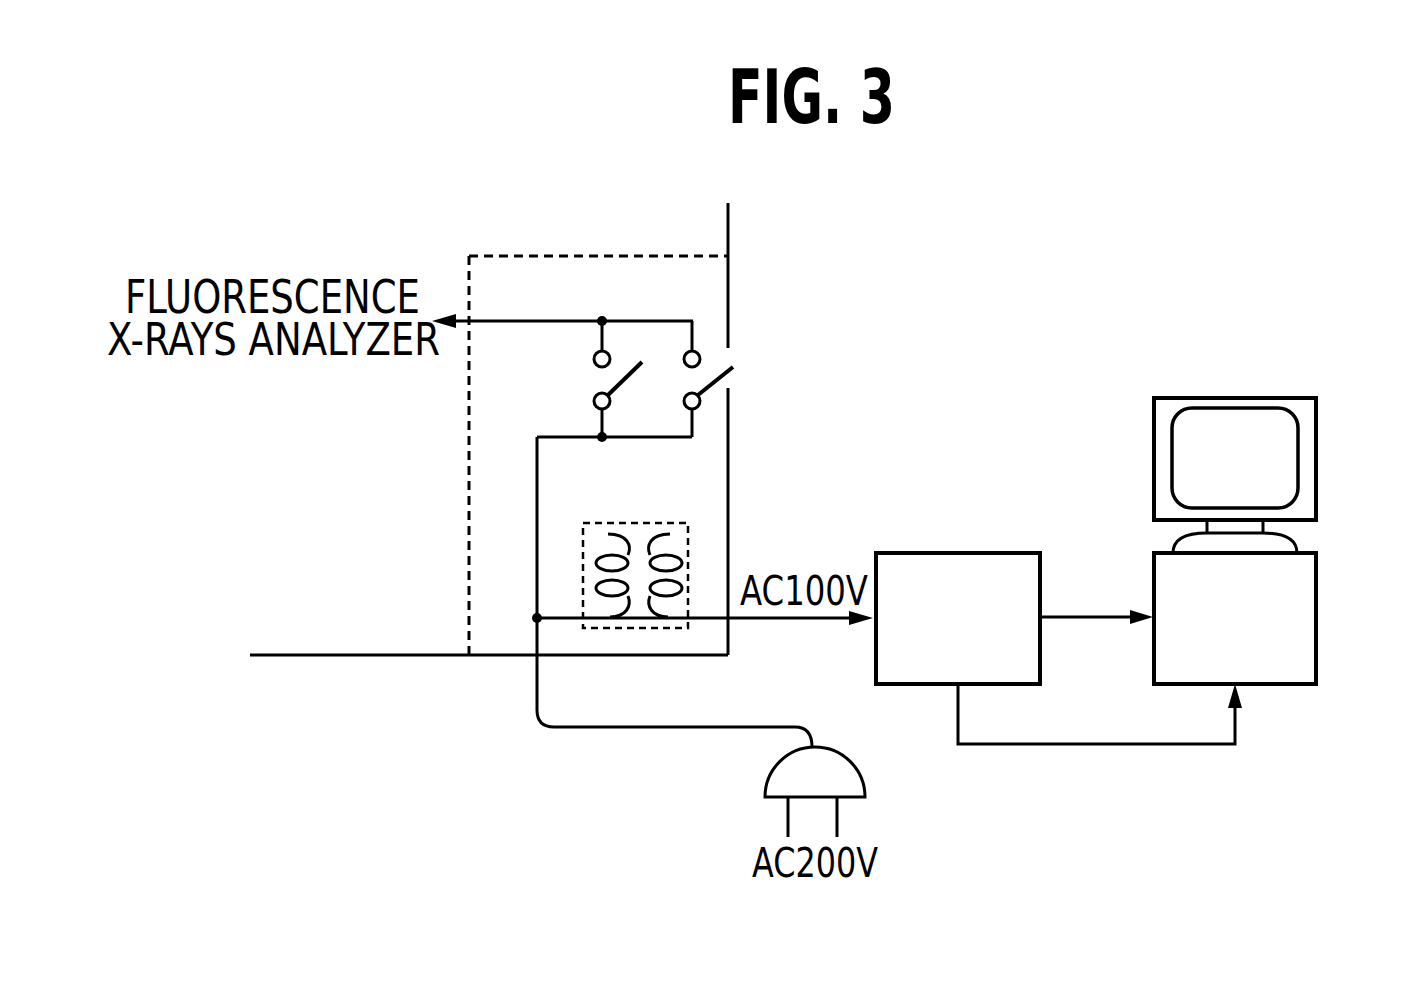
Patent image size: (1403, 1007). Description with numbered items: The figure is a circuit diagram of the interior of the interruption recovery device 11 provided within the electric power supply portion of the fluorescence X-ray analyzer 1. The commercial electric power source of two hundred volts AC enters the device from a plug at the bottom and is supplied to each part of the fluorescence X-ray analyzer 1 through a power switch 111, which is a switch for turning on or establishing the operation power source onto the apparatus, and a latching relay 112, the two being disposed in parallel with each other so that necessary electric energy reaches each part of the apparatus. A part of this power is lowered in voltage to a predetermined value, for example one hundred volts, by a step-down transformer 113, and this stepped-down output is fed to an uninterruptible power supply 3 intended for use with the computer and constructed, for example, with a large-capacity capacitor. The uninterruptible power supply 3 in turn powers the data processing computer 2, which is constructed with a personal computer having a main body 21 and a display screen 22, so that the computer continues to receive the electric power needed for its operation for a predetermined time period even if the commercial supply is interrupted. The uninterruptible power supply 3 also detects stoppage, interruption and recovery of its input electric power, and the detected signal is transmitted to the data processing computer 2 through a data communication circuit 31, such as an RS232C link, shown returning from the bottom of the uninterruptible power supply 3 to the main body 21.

The fluorescence X-ray analyzer 1 is at (663, 220).
The interruption recovery device 11 is at (662, 285).
The power switch 111 is at (708, 372).
The latching relay 112 is at (596, 378).
The step-down transformer 113 is at (645, 522).
The data processing computer 2 is at (1273, 541).
The main body 21 is at (1318, 628).
The display screen 22 is at (1316, 418).
The uninterruptible power supply 3 is at (945, 553).
The data communication circuit 31 is at (1058, 748).